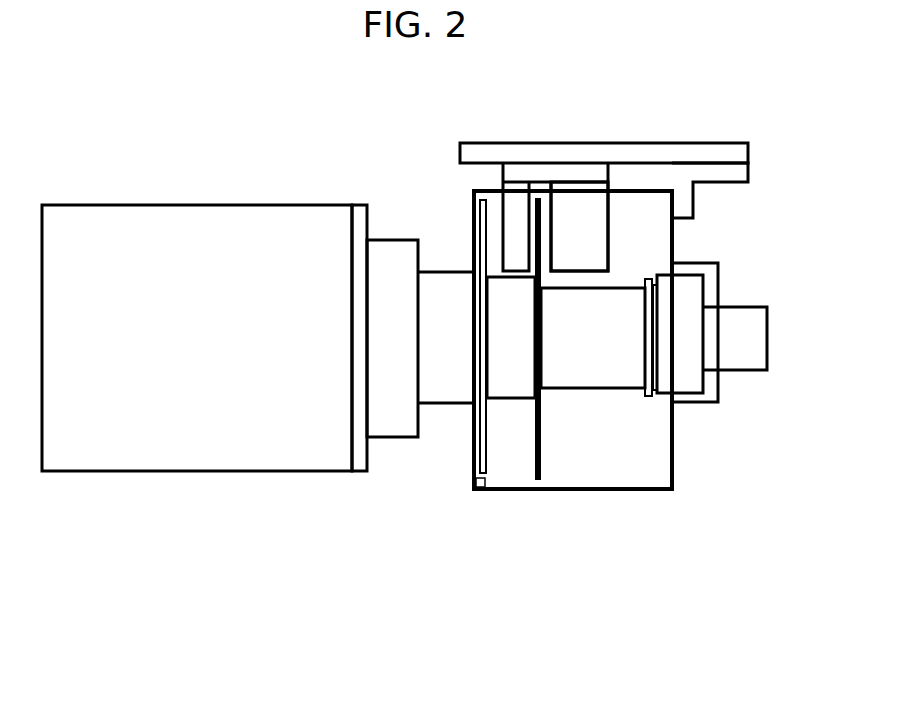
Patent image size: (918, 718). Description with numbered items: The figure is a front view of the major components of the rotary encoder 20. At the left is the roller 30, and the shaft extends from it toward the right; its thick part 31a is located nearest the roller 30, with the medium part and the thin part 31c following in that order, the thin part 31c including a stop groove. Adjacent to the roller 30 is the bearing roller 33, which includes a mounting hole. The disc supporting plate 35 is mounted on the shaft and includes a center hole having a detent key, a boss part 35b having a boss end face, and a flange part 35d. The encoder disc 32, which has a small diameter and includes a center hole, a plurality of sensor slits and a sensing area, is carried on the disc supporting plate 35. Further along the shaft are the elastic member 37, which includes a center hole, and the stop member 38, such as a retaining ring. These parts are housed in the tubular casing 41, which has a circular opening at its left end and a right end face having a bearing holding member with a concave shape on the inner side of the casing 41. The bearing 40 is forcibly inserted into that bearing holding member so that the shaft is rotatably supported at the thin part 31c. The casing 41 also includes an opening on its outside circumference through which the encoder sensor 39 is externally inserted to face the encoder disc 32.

The rotary encoder 20 is at (435, 124).
The roller 30 is at (193, 208).
The thick part 31a is at (436, 281).
The thin part 31c is at (738, 365).
The encoder disc 32 is at (541, 448).
The bearing roller 33 is at (408, 247).
The disc supporting plate 35 is at (542, 559).
The boss part 35b is at (510, 390).
The flange part 35d is at (481, 494).
The elastic member 37 is at (598, 388).
The stop member 38 is at (648, 400).
The encoder sensor 39 is at (604, 213).
The bearing 40 is at (692, 391).
The casing 41 is at (585, 491).